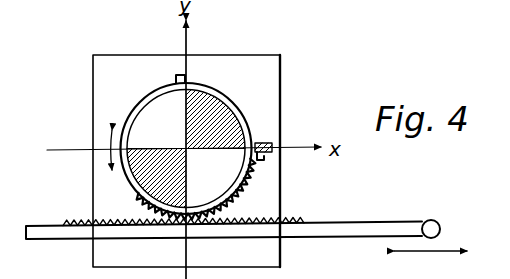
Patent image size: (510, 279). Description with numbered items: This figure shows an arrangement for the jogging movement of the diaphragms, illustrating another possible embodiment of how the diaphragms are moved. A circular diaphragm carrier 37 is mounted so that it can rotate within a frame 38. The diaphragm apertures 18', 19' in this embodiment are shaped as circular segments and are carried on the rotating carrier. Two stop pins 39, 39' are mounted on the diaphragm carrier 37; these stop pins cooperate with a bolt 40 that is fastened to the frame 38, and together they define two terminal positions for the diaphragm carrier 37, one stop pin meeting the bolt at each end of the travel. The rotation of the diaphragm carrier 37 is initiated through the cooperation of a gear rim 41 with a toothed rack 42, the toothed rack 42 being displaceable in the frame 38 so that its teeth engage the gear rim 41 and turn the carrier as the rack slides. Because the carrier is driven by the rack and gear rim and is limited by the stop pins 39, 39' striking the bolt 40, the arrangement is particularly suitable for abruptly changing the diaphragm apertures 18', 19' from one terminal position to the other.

The diaphragm aperture 18' is at (179, 146).
The diaphragm aperture 19' is at (238, 183).
The circular diaphragm carrier 37 is at (236, 105).
The frame 38 is at (249, 65).
The stop pin 39 is at (156, 50).
The stop pin 39' is at (293, 169).
The bolt 40 is at (258, 142).
The gear rim 41 is at (140, 208).
The toothed rack 42 is at (72, 233).